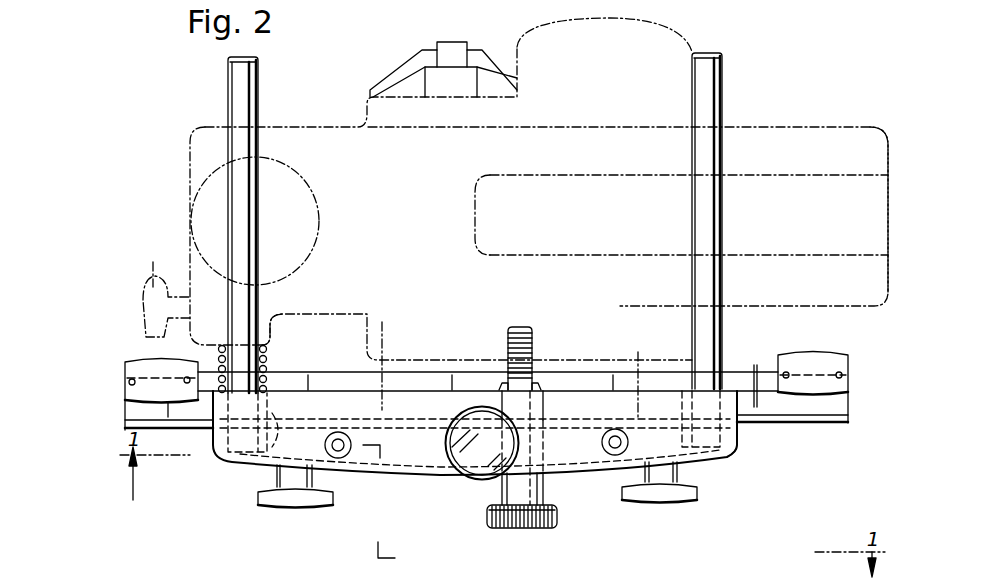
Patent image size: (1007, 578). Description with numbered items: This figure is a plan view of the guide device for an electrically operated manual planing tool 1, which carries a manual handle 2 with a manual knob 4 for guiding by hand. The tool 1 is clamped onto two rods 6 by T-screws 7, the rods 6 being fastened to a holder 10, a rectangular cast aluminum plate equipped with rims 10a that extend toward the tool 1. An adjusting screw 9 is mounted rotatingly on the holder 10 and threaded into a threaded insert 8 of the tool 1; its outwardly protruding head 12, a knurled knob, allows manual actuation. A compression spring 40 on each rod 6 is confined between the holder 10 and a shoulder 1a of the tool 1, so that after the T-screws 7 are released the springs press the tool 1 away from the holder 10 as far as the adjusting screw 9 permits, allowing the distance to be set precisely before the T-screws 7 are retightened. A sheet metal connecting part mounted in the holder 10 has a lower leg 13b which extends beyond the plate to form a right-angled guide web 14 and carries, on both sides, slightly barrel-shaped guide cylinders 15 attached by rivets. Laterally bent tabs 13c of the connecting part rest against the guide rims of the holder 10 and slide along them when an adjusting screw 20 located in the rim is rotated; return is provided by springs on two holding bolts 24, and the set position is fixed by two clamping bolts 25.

The manual planing tool 1 is at (344, 114).
The shoulder 1a is at (268, 337).
The manual handle 2 is at (783, 187).
The manual knob 4 is at (212, 187).
The rods 6 is at (237, 88).
The T-screws 7 is at (740, 295).
The threaded insert 8 is at (538, 382).
The adjusting screw 9 is at (508, 345).
The holder 10 is at (415, 470).
The rim 10a is at (700, 440).
The head 12 is at (487, 512).
The lower leg 13b is at (322, 383).
The laterally bent tabs 13c is at (273, 448).
The guide web 14 is at (787, 419).
The guide cylinders 15 is at (150, 365).
The adjusting screw 20 is at (462, 468).
The holding bolts 24 is at (340, 455).
The clamping bolts 25 is at (297, 498).
The compression spring 40 is at (266, 363).